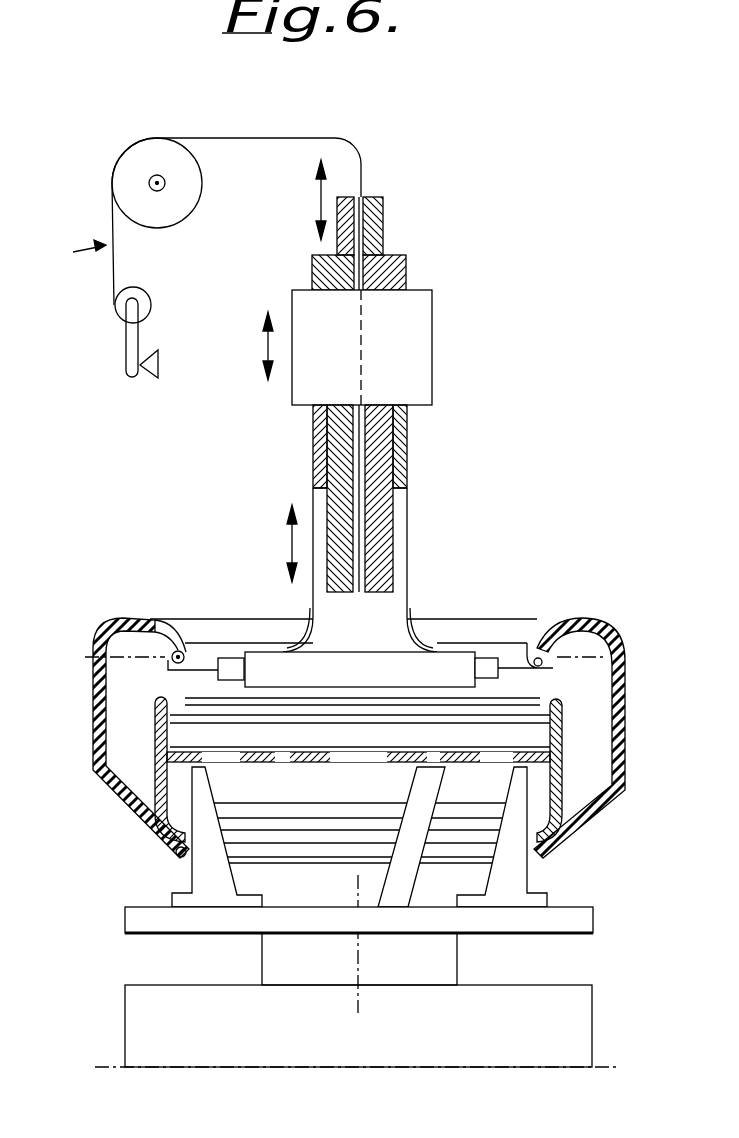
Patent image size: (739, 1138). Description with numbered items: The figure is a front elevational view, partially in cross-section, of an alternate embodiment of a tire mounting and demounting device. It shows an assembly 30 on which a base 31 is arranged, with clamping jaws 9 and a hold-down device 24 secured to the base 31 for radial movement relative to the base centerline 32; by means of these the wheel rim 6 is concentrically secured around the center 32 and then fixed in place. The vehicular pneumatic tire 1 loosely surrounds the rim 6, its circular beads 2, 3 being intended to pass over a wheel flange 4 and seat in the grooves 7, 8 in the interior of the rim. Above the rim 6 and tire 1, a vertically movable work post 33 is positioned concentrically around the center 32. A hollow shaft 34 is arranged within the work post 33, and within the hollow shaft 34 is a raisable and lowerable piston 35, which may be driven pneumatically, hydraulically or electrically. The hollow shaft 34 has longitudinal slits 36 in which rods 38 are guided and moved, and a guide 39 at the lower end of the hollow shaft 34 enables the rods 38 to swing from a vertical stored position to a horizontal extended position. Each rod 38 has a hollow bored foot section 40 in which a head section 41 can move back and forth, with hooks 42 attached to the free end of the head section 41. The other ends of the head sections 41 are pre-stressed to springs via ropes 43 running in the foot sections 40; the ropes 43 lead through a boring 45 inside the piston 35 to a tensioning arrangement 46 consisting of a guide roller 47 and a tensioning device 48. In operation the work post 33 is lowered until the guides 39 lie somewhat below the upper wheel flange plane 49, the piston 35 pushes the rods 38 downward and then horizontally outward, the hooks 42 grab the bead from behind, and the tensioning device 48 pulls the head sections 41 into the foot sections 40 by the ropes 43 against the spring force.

The vehicular pneumatic tire 1 is at (97, 772).
The circular bead 2 is at (178, 858).
The circular bead 3 is at (125, 620).
The wheel flange 4 is at (540, 700).
The wheel rim 6 is at (557, 757).
The groove 7 is at (557, 715).
The groove 8 is at (560, 815).
The clamping jaws 9 is at (260, 898).
The hold-down device 24 is at (425, 783).
The assembly 30 is at (570, 1018).
The base 31 is at (142, 922).
The base centerline 32 is at (358, 960).
The work post 33 is at (410, 360).
The hollow shaft 34 is at (393, 440).
The piston 35 is at (347, 455).
The longitudinal slits 36 is at (400, 528).
The rods 38 is at (420, 630).
The guide 39 is at (260, 662).
The foot section 40 is at (490, 670).
The head section 41 is at (202, 667).
The hooks 42 is at (95, 657).
The ropes 43 is at (362, 165).
The boring 45 is at (378, 230).
The tensioning arrangement 46 is at (67, 253).
The guide roller 47 is at (173, 208).
The tensioning device 48 is at (126, 343).
The upper wheel flange plane 49 is at (195, 700).